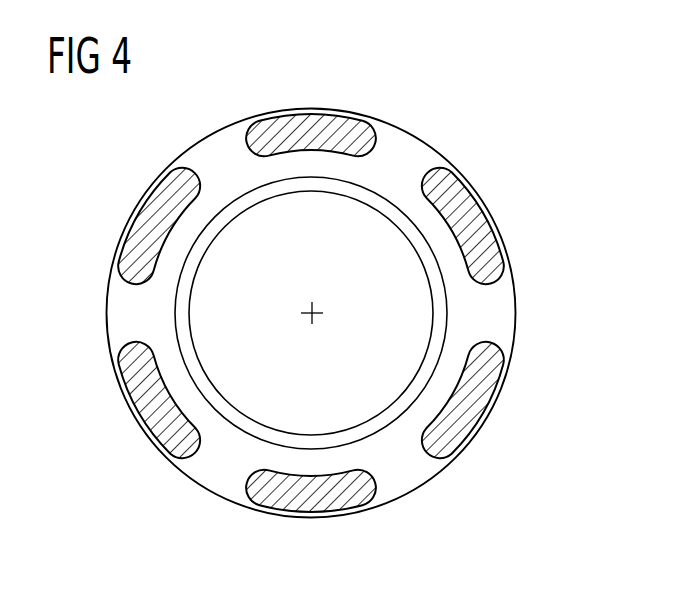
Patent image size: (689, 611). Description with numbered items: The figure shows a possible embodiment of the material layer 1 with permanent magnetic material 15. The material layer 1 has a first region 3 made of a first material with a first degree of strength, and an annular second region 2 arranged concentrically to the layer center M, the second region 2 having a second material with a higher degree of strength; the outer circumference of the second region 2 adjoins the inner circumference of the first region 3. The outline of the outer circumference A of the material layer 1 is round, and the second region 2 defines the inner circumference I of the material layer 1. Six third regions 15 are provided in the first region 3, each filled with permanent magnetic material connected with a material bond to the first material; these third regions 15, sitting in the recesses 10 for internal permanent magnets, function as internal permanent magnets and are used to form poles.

The material layer 1 is at (531, 480).
The second region 2 is at (380, 423).
The first region 3 is at (502, 312).
The recesses 10 is at (315, 510).
The third region 15 is at (487, 197).
The outer circumference A is at (110, 290).
The inner circumference I is at (192, 342).
The layer center M is at (322, 318).